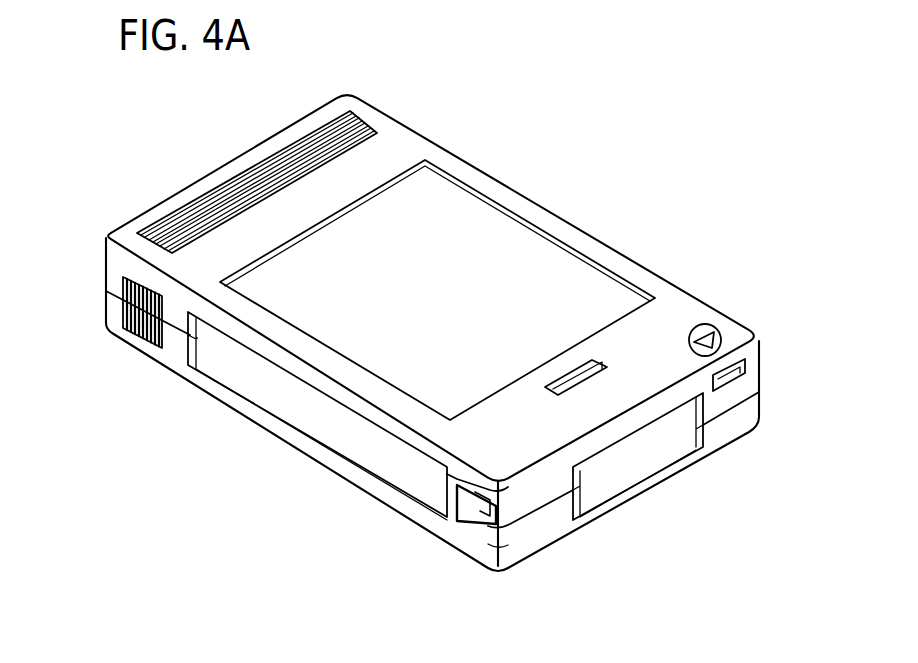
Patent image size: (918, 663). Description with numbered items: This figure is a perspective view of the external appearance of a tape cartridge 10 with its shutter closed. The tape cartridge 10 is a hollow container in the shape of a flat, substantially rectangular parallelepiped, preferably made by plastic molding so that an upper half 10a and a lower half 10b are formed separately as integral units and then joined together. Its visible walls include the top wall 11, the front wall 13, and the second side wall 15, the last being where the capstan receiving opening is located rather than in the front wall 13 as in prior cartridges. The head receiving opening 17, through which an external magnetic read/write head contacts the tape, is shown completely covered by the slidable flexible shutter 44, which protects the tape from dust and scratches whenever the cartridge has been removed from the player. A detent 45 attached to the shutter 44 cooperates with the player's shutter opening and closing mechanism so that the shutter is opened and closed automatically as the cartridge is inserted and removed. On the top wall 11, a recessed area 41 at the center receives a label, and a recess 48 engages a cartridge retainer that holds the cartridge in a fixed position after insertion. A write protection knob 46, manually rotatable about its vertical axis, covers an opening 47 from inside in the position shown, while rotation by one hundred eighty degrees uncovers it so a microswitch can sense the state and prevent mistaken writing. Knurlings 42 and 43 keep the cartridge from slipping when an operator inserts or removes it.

The tape cartridge 10 is at (442, 309).
The upper half 10a is at (117, 276).
The lower half 10b is at (117, 330).
The top wall 11 is at (405, 150).
The front wall 13 is at (738, 426).
The second side wall 15 is at (175, 356).
The head receiving opening 17 is at (614, 491).
The recessed area 41 is at (570, 265).
The knurling 42 is at (312, 142).
The knurling 43 is at (133, 328).
The slidable flexible shutter 44 is at (327, 428).
The detent 45 is at (462, 507).
The write protection knob 46 is at (713, 337).
The opening 47 is at (728, 376).
The recess 48 is at (573, 374).